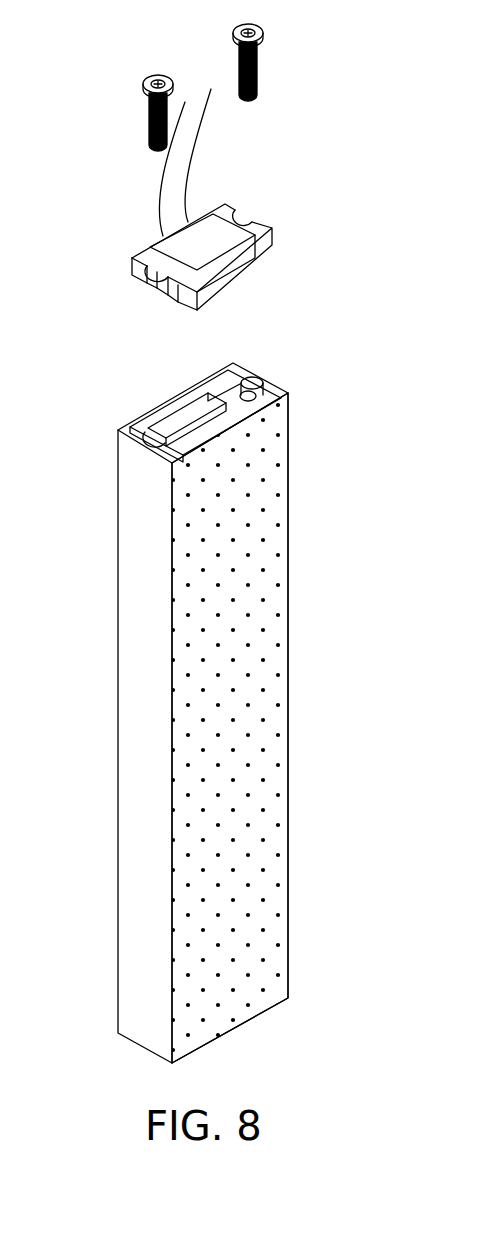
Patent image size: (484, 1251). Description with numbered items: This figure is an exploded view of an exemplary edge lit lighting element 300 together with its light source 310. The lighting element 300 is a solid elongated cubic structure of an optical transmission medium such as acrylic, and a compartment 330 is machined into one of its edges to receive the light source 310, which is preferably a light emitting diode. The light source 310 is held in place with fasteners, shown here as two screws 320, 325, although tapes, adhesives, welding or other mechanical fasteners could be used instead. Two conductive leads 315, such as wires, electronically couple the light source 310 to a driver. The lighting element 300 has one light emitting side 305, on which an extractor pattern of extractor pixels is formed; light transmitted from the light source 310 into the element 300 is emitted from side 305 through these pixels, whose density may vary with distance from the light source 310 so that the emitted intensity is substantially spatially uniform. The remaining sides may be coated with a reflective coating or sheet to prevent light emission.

The lighting element 300 is at (149, 702).
The light emitting side 305 is at (190, 627).
The light source 310 is at (220, 252).
The conductive leads 315 is at (190, 155).
The screw 320 is at (145, 83).
The screw 325 is at (233, 32).
The compartment 330 is at (185, 418).